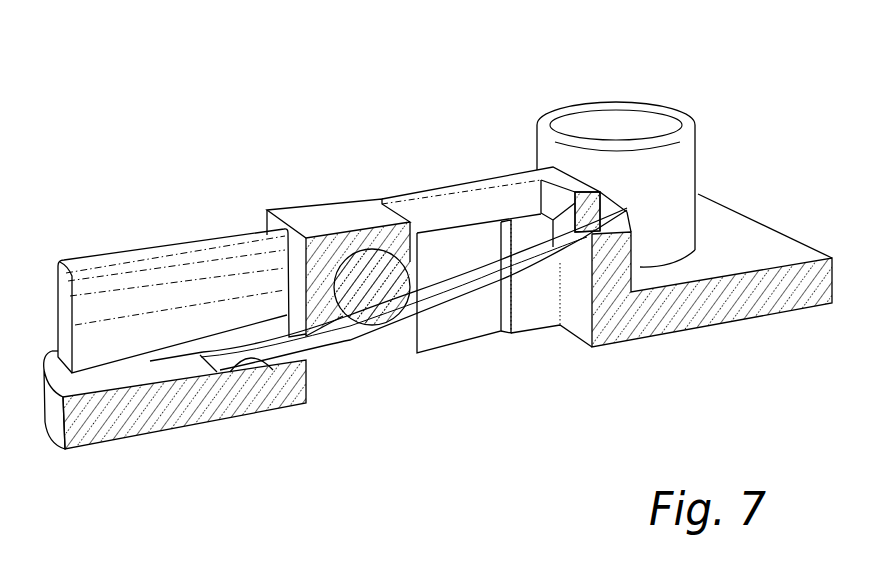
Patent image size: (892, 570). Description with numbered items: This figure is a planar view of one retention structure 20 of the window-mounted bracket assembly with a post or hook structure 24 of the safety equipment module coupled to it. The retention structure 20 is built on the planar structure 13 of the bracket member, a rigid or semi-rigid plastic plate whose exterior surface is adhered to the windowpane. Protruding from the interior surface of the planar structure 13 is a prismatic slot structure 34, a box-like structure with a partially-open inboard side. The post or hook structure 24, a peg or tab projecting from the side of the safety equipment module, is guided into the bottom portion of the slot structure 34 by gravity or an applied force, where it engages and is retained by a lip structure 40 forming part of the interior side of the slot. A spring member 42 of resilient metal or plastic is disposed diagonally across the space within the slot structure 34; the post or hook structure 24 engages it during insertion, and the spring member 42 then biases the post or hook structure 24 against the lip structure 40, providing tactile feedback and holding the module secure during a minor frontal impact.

The planar structure 13 is at (217, 420).
The retention structure 20 is at (487, 138).
The post or hook structure 24 is at (377, 307).
The slot structure 34 is at (327, 200).
The lip structure 40 is at (364, 212).
The spring member 42 is at (453, 298).